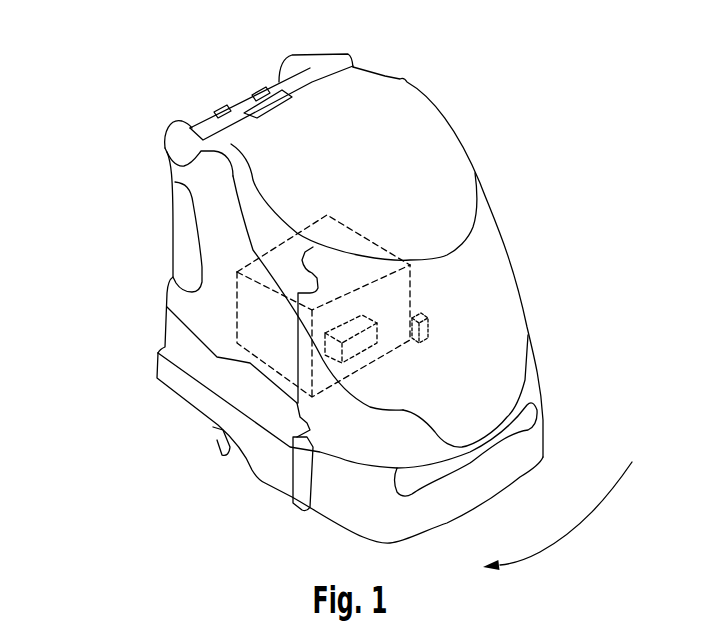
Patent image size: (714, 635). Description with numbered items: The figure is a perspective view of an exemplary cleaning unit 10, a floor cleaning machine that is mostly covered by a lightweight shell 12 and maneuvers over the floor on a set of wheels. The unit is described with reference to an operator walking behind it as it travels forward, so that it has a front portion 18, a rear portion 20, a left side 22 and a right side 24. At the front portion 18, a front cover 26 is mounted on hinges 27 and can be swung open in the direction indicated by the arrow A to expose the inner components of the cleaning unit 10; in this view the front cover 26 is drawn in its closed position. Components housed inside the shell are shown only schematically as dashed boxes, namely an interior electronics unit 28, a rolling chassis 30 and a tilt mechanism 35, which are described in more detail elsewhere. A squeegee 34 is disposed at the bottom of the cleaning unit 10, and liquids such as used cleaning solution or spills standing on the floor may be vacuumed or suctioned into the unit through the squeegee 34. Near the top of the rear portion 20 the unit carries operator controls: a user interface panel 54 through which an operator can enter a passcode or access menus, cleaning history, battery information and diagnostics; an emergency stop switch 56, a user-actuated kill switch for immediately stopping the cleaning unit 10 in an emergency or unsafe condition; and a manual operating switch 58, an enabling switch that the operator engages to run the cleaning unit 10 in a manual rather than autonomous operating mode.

The cleaning unit 10 is at (124, 72).
The lightweight shell 12 is at (515, 261).
The front portion 18 is at (600, 558).
The rear portion 20 is at (141, 197).
The left side 22 is at (532, 108).
The right side 24 is at (110, 493).
The front cover 26 is at (500, 297).
The hinges 27 is at (310, 493).
The interior electronics unit 28 is at (380, 327).
The rolling chassis 30 is at (350, 227).
The squeegee 34 is at (218, 445).
The tilt mechanism 35 is at (430, 330).
The user interface panel 54 is at (308, 97).
The emergency stop switch 56 is at (213, 105).
The manual operating switch 58 is at (253, 88).